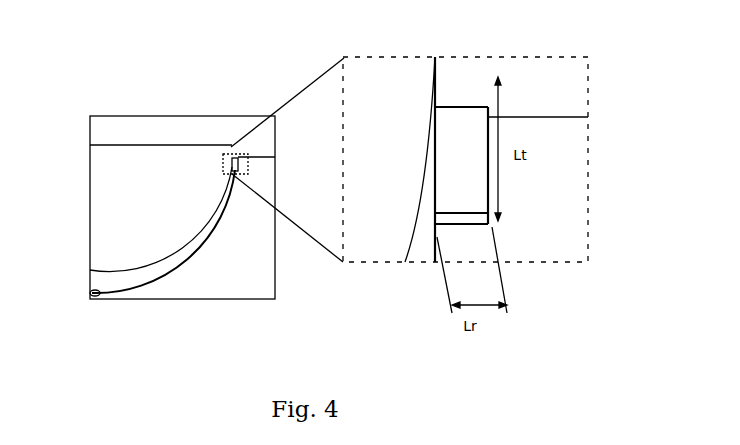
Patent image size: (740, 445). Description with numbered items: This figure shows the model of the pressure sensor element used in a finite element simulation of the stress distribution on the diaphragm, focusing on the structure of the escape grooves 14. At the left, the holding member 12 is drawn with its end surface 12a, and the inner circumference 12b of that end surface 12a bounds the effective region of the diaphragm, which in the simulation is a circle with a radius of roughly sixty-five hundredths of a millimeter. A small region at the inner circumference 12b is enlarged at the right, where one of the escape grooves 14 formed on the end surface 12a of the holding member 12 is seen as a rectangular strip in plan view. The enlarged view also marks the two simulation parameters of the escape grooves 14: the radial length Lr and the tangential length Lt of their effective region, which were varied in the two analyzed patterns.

The holding member 12 is at (123, 302).
The end surface 12a is at (210, 280).
The inner circumference 12b is at (172, 258).
The escape grooves 14 is at (225, 175).